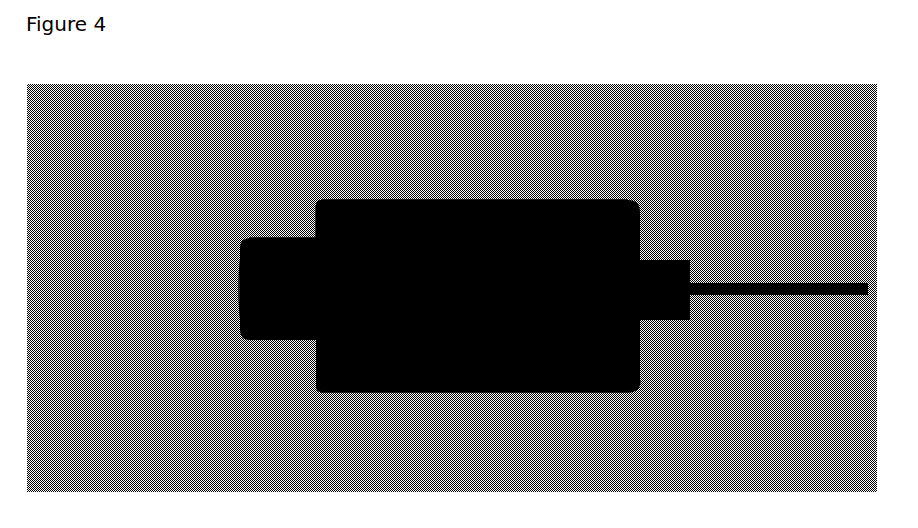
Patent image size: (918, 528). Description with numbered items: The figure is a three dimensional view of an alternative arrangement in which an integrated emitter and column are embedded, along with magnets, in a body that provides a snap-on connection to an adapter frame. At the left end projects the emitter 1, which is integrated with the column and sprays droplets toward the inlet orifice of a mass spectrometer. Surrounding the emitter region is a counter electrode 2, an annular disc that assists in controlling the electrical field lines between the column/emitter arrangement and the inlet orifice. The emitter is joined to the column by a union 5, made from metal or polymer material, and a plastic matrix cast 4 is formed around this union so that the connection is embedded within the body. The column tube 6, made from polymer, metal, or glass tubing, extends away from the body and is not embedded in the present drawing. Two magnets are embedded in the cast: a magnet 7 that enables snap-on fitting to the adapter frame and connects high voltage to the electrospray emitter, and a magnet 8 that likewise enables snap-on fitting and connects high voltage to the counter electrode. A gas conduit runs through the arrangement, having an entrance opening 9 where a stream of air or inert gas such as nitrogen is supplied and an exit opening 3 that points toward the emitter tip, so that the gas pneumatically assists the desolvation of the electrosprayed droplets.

The emitter 1 is at (248, 300).
The counter electrode 2 is at (226, 252).
The exit opening of the gas conduit 3 is at (244, 318).
The plastic matrix cast 4 is at (330, 218).
The union 5 is at (490, 226).
The column tube 6 is at (822, 286).
The magnet 7 is at (330, 388).
The magnet 8 is at (492, 376).
The entrance opening of the gas conduit 9 is at (622, 384).